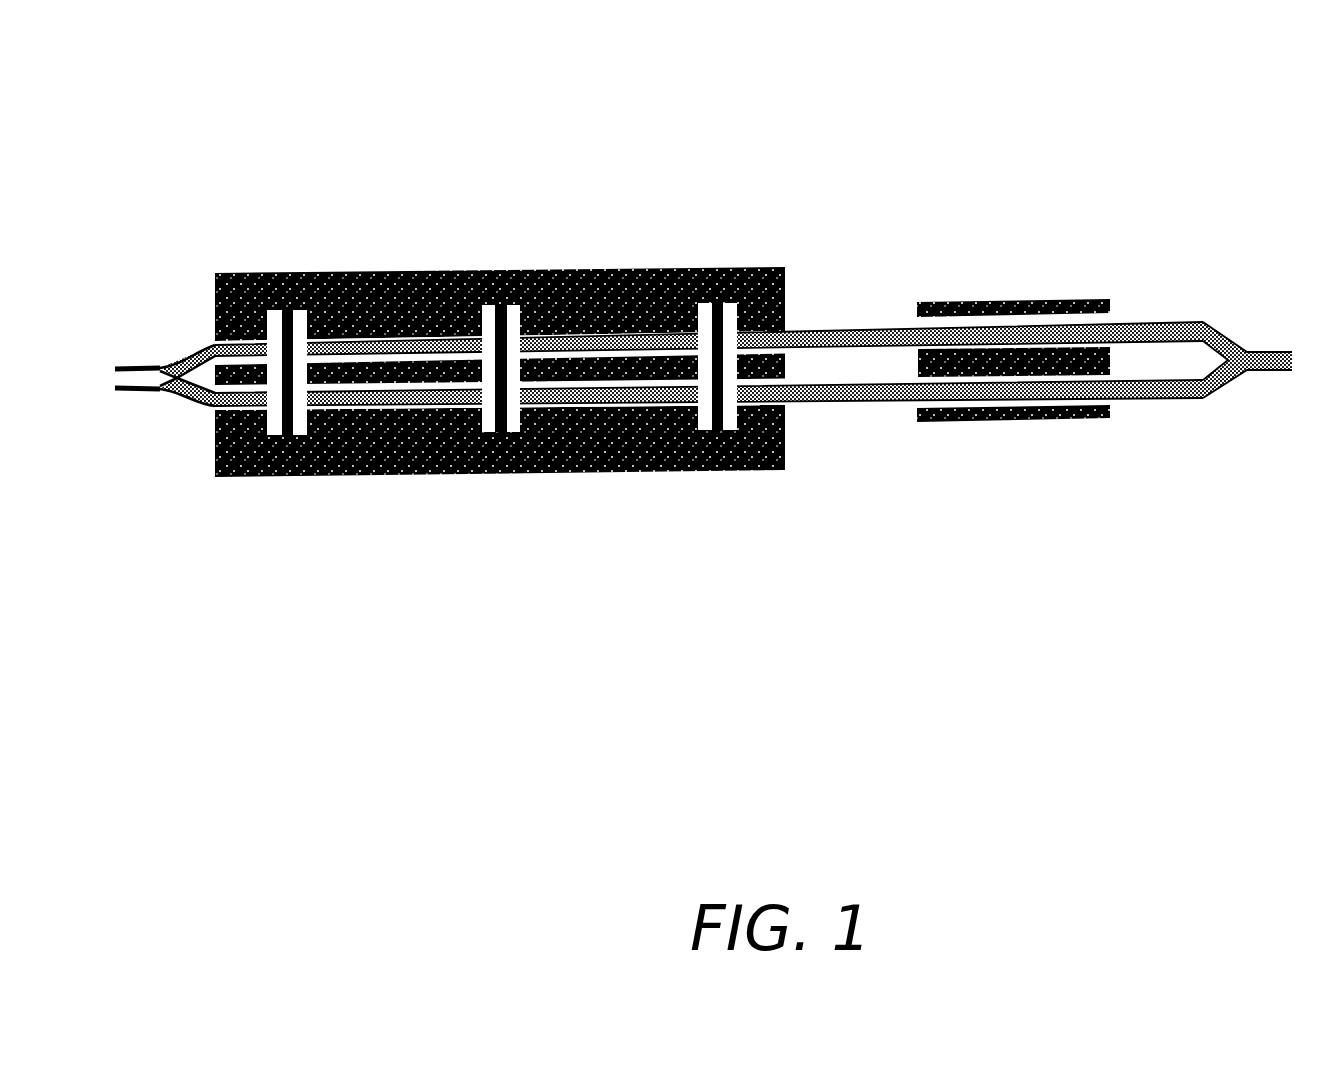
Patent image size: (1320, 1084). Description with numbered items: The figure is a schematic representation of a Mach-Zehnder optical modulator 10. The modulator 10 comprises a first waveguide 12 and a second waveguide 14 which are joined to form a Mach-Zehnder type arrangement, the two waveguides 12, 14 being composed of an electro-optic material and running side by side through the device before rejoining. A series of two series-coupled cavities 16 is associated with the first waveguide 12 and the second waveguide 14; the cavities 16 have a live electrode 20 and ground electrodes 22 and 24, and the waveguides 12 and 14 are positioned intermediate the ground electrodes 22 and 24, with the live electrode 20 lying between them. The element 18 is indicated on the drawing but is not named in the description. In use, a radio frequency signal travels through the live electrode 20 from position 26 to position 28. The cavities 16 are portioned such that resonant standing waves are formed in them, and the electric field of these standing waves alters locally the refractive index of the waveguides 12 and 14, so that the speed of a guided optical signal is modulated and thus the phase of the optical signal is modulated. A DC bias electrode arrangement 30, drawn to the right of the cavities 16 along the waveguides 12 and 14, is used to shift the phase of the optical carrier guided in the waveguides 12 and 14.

The modulator 10 is at (613, 180).
The first waveguide 12 is at (860, 330).
The second waveguide 14 is at (870, 403).
The series-coupled cavities 16 is at (803, 274).
The substrate body 18 is at (799, 431).
The live electrode 20 is at (803, 334).
The ground electrode 22 is at (658, 268).
The ground electrode 24 is at (645, 468).
The position 26 is at (210, 363).
The position 28 is at (785, 367).
The DC bias electrode arrangement 30 is at (1038, 293).